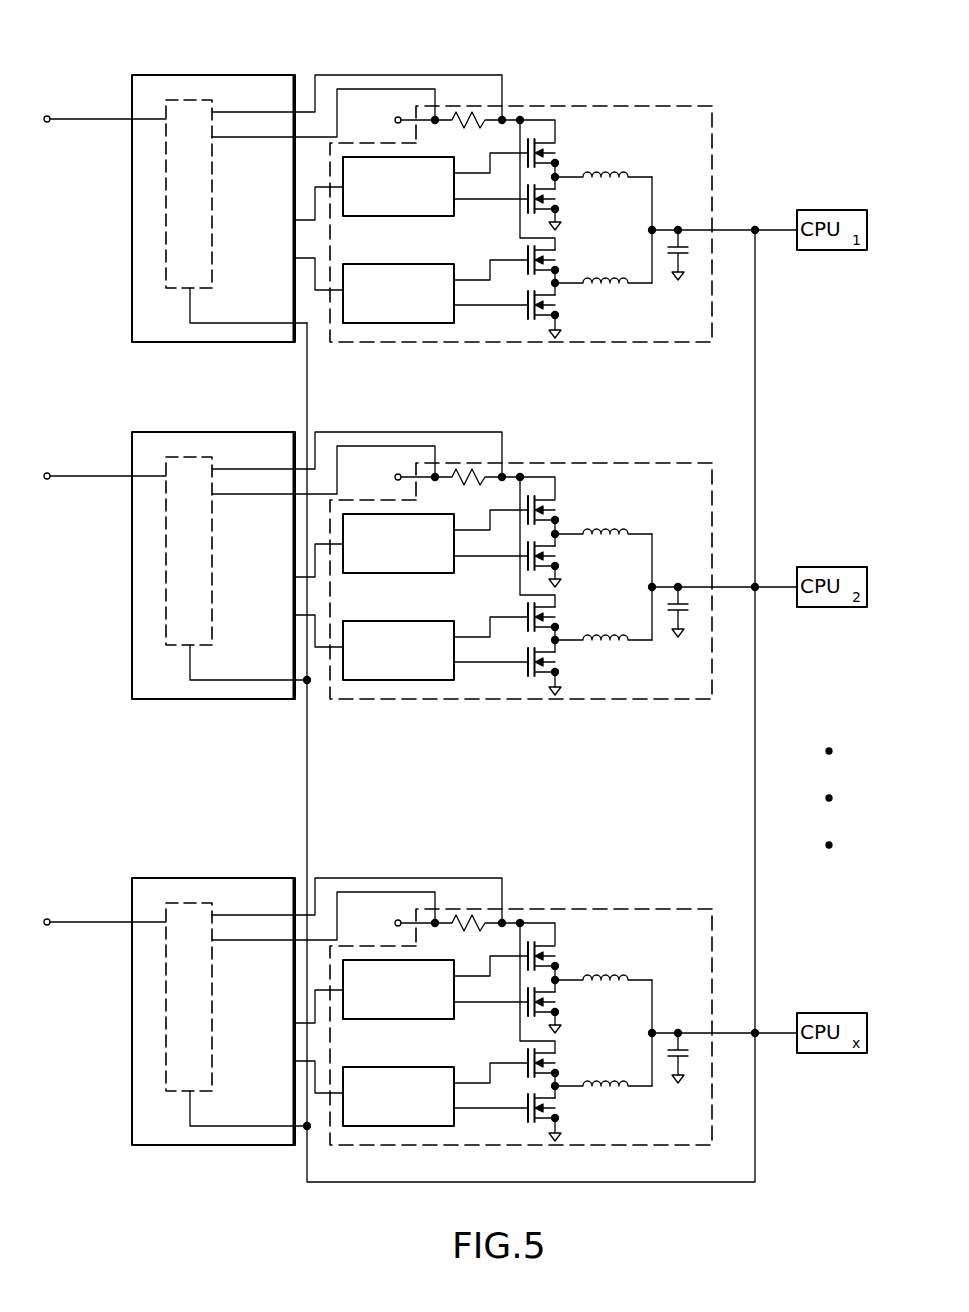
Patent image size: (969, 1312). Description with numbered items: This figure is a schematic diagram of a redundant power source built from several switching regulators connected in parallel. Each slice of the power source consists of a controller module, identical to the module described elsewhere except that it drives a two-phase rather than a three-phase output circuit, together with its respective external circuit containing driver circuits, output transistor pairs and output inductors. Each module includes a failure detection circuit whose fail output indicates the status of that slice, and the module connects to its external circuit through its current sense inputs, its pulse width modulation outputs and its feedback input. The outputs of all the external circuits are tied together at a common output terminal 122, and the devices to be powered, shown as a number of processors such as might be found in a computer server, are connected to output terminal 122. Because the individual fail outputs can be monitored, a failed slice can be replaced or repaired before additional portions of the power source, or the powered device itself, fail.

The output terminal 122 is at (756, 225).